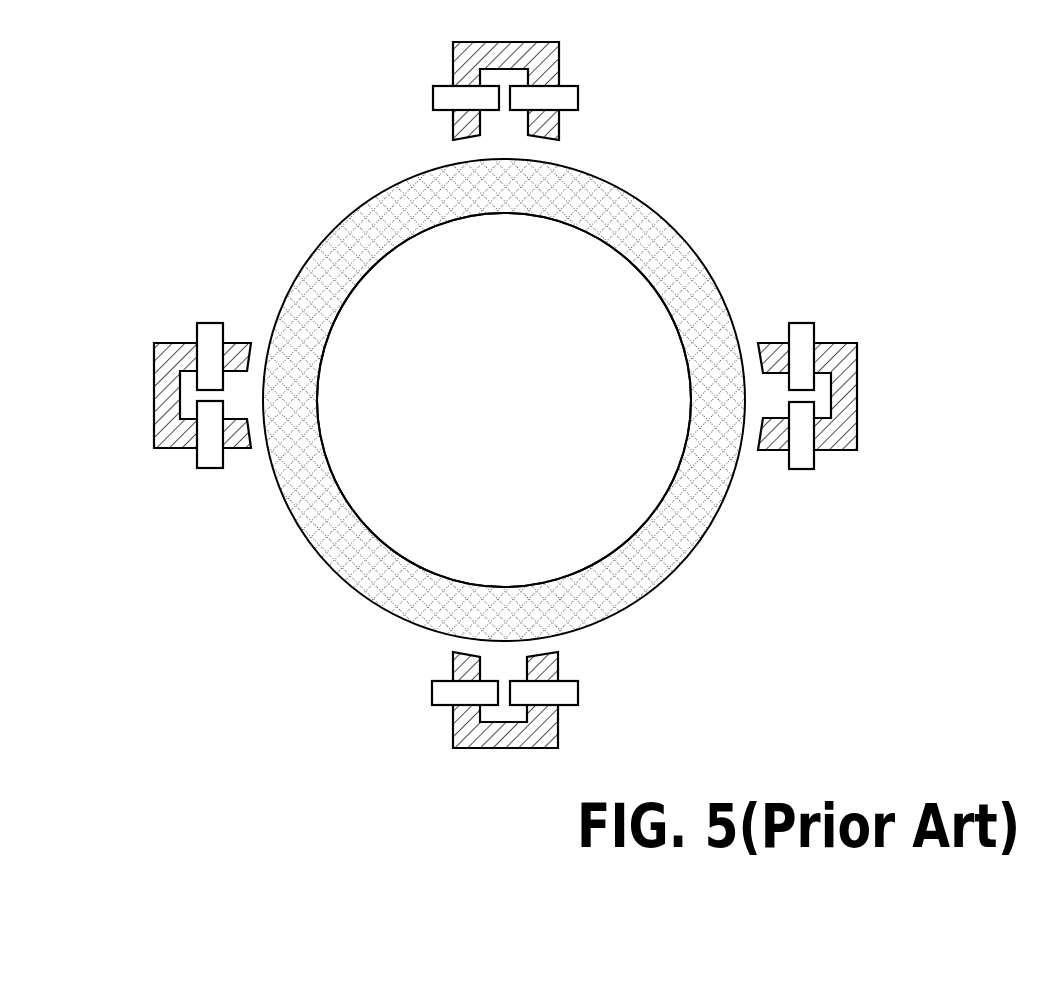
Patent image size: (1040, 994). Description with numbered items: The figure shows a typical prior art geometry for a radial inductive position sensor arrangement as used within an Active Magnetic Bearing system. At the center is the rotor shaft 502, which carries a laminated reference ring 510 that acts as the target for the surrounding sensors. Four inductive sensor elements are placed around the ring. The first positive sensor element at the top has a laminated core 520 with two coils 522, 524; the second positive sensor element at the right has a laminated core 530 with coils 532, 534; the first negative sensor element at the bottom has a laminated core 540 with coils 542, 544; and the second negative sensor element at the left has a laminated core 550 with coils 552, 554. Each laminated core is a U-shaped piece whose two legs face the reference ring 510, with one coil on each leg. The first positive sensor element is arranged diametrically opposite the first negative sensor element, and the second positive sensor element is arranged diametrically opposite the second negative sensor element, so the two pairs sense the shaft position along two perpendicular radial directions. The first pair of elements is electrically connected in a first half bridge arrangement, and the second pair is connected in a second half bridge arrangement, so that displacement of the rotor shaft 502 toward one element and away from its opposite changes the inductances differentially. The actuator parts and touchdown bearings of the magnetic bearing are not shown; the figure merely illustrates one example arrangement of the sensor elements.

The rotor shaft 502 is at (491, 416).
The laminated reference ring 510 is at (686, 552).
The laminated core 520 is at (453, 42).
The coil 522 is at (433, 97).
The coil 524 is at (578, 97).
The laminated core 530 is at (857, 360).
The coil 532 is at (805, 323).
The coil 534 is at (800, 469).
The laminated core 540 is at (465, 748).
The coil 542 is at (578, 692).
The coil 544 is at (432, 693).
The laminated core 550 is at (154, 425).
The coil 552 is at (210, 468).
The coil 554 is at (210, 322).